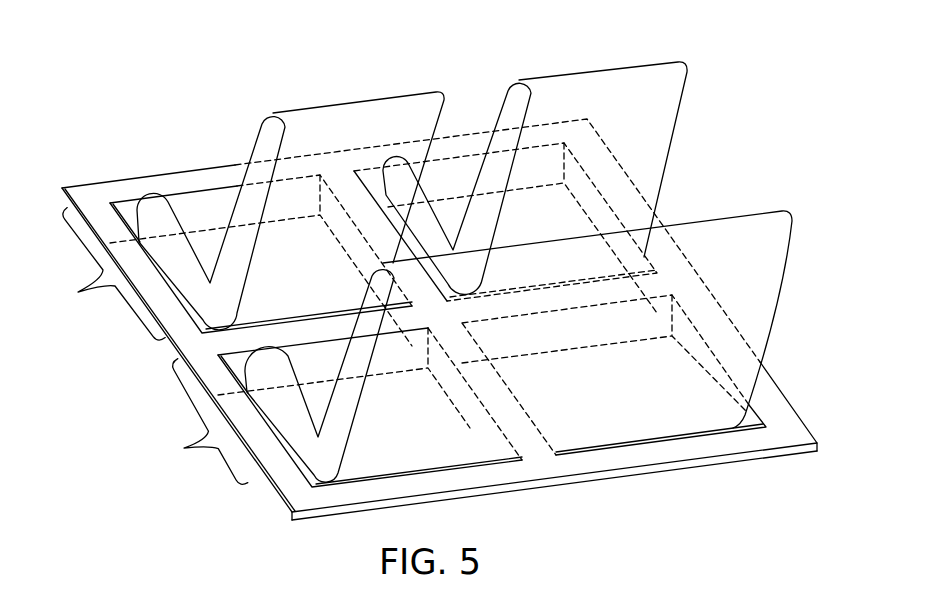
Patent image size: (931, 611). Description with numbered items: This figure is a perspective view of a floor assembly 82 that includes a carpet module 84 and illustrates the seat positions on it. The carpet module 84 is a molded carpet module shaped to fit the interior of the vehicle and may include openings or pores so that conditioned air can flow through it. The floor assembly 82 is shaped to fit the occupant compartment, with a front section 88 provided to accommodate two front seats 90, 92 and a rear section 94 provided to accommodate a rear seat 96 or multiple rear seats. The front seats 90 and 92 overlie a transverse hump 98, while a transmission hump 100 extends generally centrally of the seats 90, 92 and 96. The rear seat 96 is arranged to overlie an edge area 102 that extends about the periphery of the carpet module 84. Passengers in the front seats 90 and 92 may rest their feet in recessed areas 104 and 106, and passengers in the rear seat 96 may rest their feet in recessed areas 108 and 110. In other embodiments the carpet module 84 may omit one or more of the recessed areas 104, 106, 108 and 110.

The floor assembly 82 is at (780, 180).
The carpet module 84 is at (802, 428).
The front section 88 is at (78, 292).
The front seat 90 is at (264, 123).
The front seat 92 is at (602, 76).
The rear section 94 is at (184, 448).
The rear seat 96 is at (722, 232).
The transverse hump 98 is at (205, 344).
The transmission hump 100 is at (346, 178).
The edge area 102 is at (604, 460).
The recessed area 104 is at (128, 207).
The recessed area 106 is at (471, 158).
The recessed area 108 is at (297, 463).
The recessed area 110 is at (754, 420).